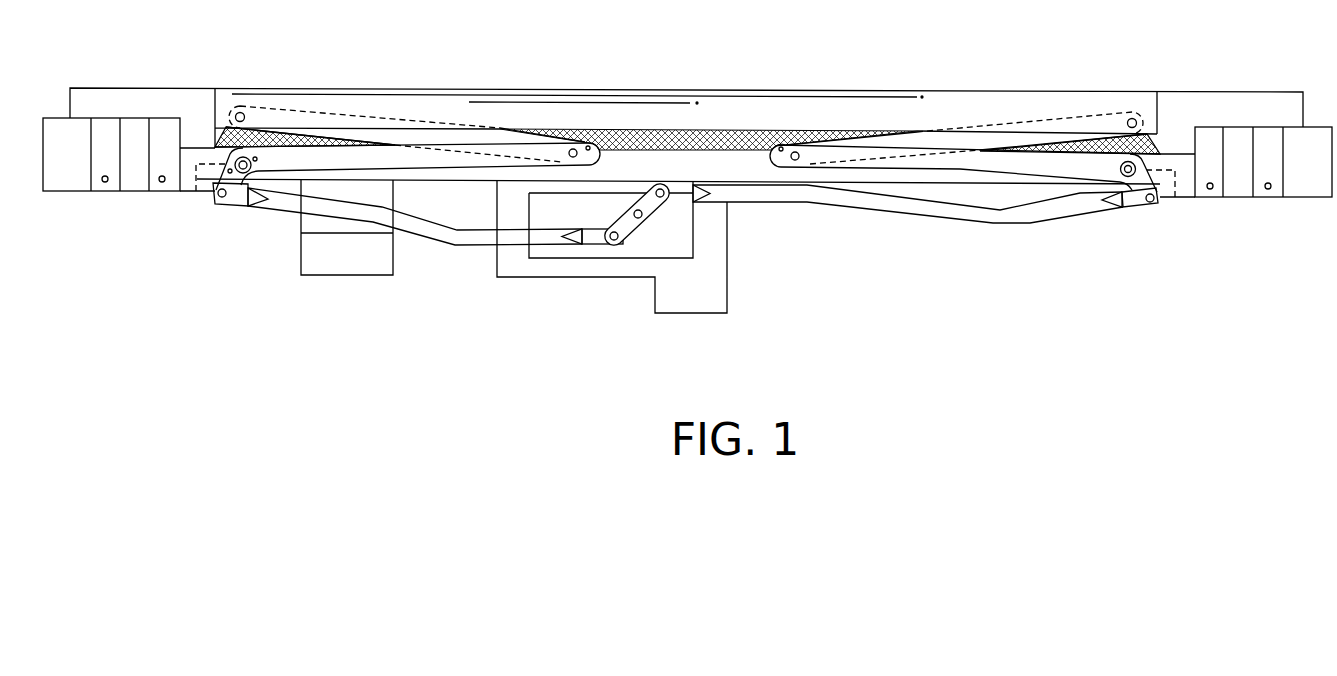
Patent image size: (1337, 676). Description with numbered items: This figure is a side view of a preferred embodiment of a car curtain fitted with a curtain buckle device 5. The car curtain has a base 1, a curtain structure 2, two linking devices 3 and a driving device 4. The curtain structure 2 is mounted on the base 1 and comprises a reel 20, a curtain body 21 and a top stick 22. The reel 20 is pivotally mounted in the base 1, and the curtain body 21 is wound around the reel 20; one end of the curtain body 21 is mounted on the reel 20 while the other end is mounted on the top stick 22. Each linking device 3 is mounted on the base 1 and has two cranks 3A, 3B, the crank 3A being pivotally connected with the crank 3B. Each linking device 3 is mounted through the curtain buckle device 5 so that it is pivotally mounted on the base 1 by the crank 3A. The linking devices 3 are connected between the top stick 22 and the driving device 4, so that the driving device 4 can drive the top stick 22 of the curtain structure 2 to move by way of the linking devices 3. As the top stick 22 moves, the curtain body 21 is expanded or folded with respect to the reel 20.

The base 1 is at (187, 173).
The curtain structure 2 is at (972, 80).
The top stick 22 is at (895, 102).
The curtain body 21 is at (1097, 140).
The reel 20 is at (1175, 170).
The linking device 3 is at (528, 130).
The crank 3A is at (302, 162).
The crank 3B is at (422, 137).
The driving device 4 is at (605, 290).
The curtain buckle device 5 is at (225, 158).